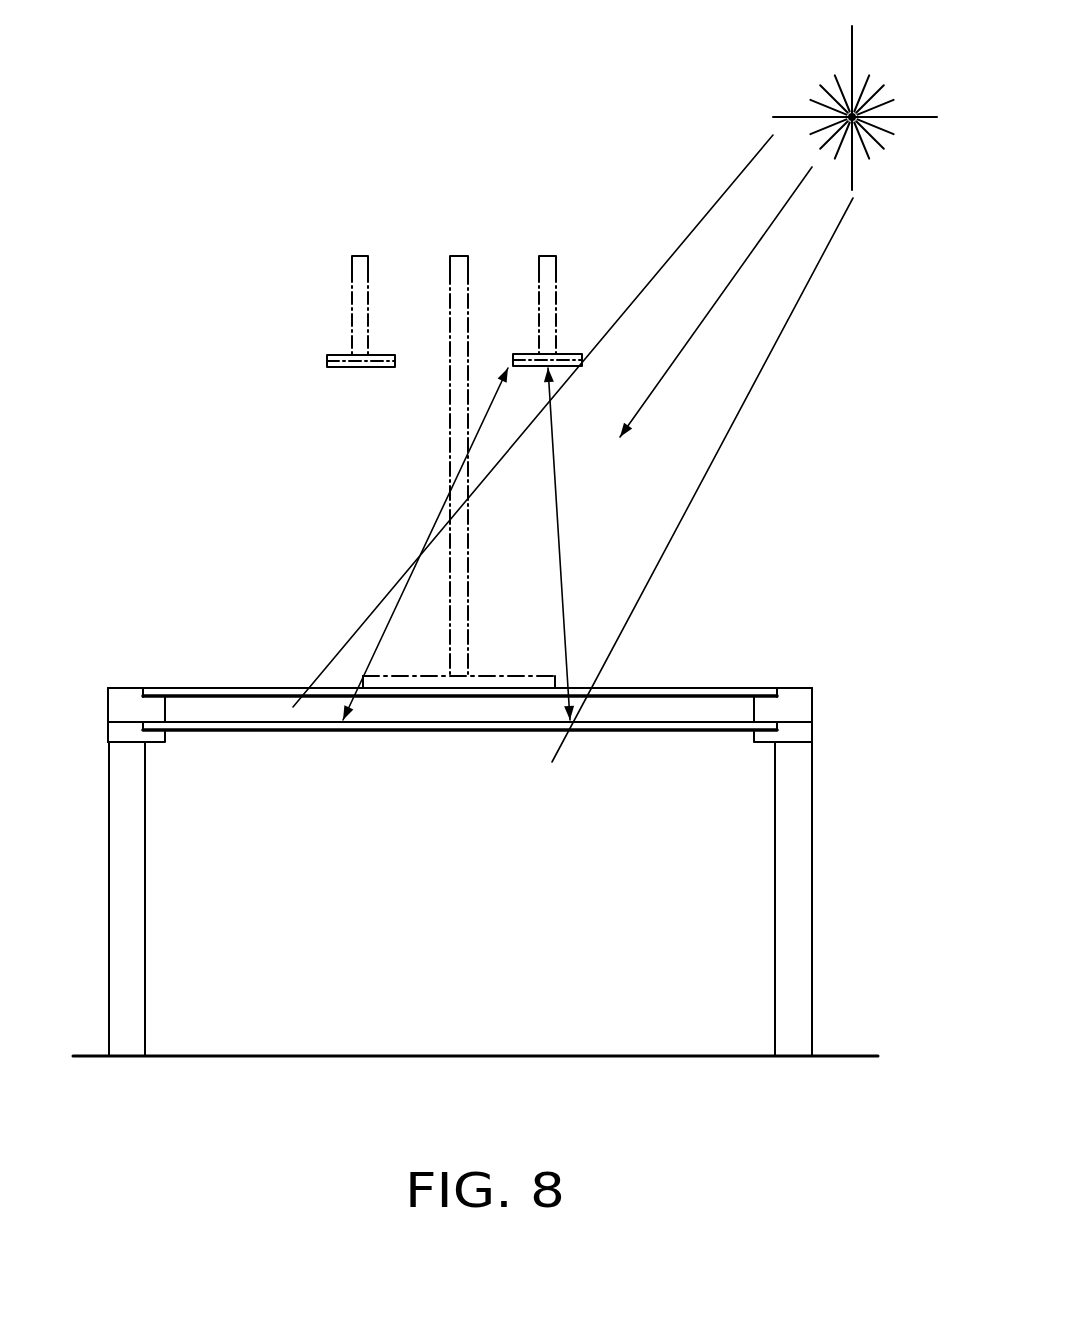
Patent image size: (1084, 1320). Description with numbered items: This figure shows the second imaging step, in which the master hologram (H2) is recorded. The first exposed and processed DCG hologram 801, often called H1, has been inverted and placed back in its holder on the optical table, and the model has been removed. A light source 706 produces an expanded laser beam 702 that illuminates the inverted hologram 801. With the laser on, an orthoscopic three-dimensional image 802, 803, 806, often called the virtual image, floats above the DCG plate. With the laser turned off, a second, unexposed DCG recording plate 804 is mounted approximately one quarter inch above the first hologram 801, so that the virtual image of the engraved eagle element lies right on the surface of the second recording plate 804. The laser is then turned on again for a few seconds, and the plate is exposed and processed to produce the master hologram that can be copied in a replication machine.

The light source 706 is at (790, 113).
The expanded laser beam 702 is at (754, 243).
The orthoscopic three-dimensional image 802 is at (521, 340).
The orthoscopic three-dimensional image 806 is at (333, 340).
The orthoscopic three-dimensional image 803 is at (415, 675).
The second recording plate 804 is at (655, 687).
The first exposed and processed DCG hologram 801 is at (310, 732).